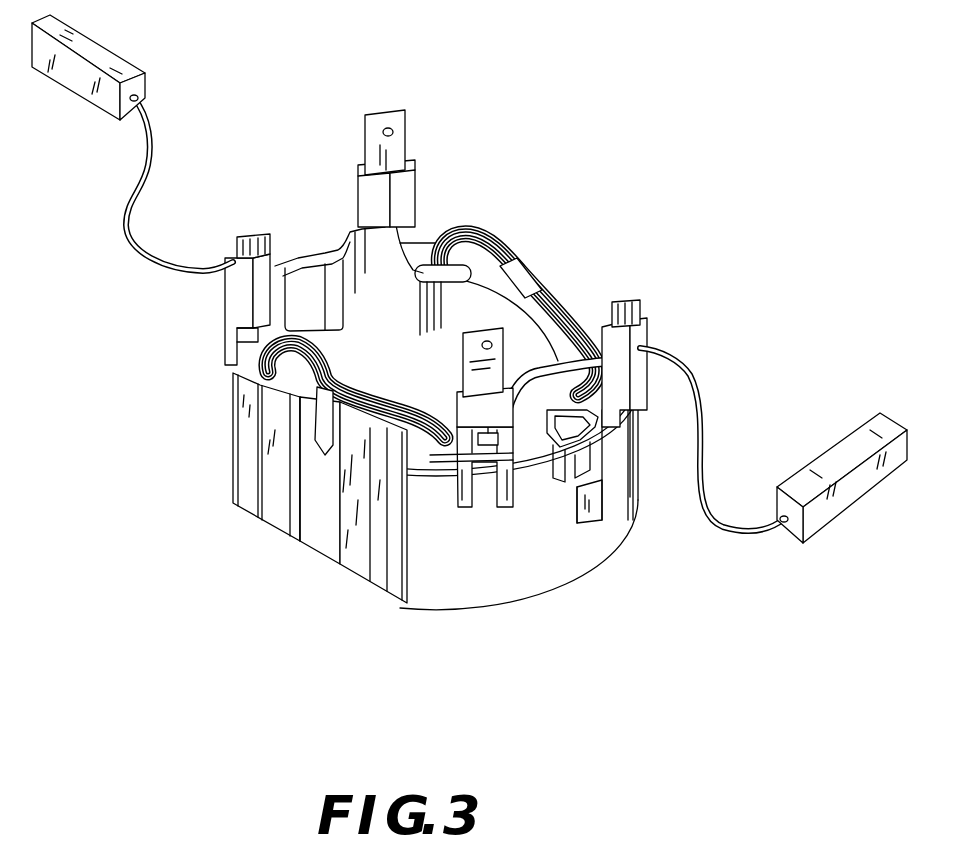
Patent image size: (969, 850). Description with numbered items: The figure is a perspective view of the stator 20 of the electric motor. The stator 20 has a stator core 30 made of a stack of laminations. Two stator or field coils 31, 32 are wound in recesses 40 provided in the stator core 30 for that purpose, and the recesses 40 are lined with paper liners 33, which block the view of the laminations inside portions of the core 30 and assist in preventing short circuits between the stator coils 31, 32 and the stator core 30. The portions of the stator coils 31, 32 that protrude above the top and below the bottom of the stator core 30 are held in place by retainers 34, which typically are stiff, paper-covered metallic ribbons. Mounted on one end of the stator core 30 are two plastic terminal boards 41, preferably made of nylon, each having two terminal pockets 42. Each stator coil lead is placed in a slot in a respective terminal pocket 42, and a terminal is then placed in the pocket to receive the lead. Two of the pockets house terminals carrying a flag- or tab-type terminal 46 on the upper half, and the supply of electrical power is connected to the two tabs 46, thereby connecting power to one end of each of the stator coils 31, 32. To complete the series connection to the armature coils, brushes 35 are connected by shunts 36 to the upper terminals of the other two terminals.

The stator 20 is at (558, 566).
The stator core 30 is at (227, 550).
The stator coil 31 is at (490, 247).
The stator coil 32 is at (310, 370).
The paper liner 33 is at (441, 290).
The retainer 34 is at (320, 440).
The brush 35 is at (100, 55).
The shunt 36 is at (152, 150).
The recess 40 is at (437, 243).
The terminal board 41 is at (322, 265).
The terminal pocket 42 is at (237, 307).
The tab-type terminal 46 is at (397, 135).